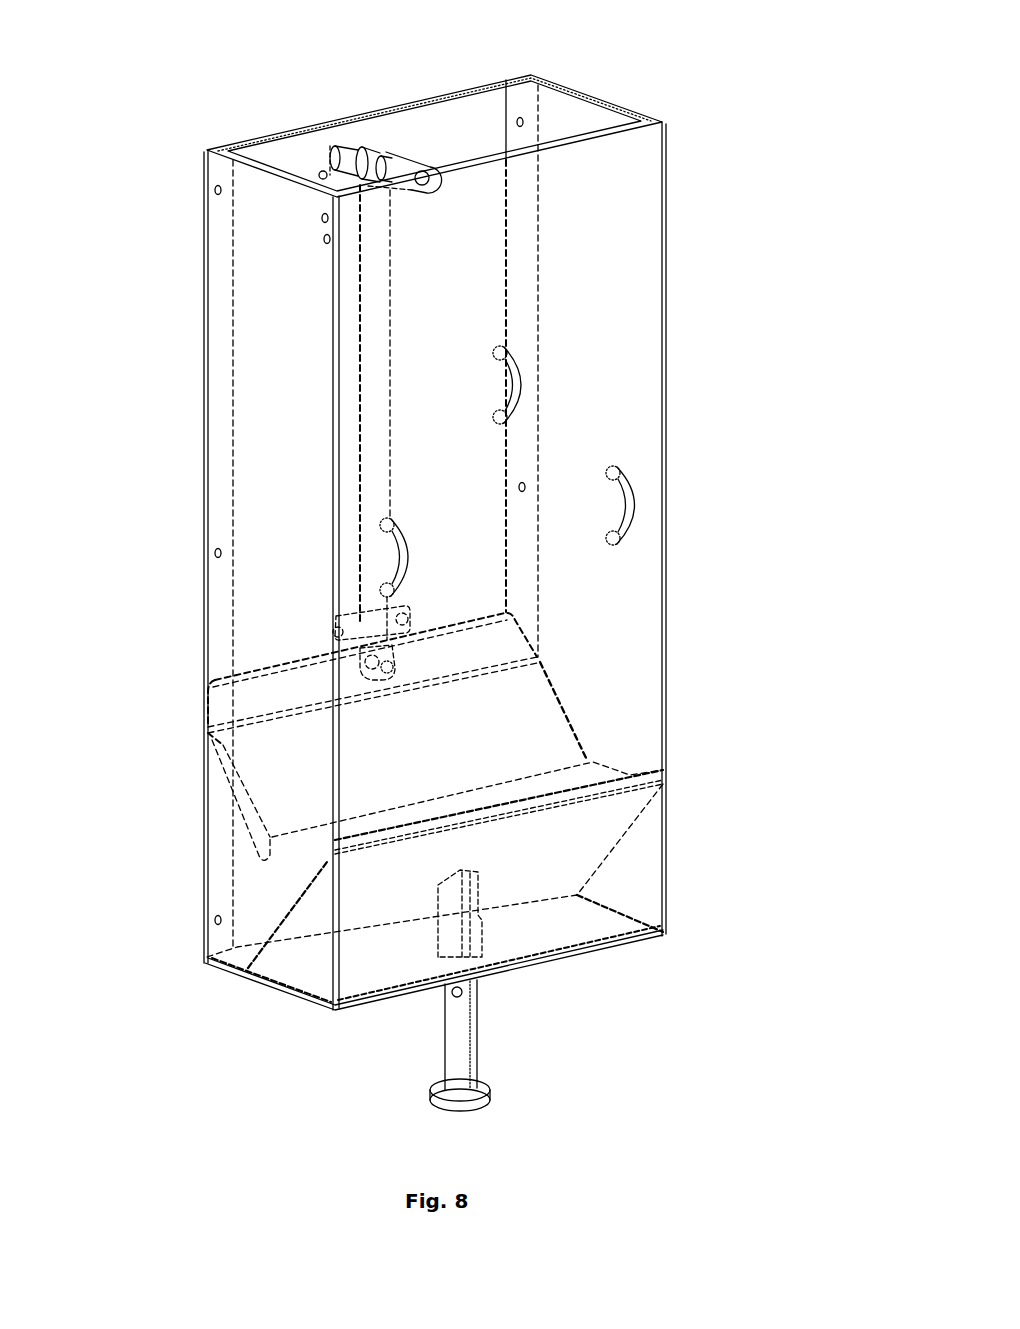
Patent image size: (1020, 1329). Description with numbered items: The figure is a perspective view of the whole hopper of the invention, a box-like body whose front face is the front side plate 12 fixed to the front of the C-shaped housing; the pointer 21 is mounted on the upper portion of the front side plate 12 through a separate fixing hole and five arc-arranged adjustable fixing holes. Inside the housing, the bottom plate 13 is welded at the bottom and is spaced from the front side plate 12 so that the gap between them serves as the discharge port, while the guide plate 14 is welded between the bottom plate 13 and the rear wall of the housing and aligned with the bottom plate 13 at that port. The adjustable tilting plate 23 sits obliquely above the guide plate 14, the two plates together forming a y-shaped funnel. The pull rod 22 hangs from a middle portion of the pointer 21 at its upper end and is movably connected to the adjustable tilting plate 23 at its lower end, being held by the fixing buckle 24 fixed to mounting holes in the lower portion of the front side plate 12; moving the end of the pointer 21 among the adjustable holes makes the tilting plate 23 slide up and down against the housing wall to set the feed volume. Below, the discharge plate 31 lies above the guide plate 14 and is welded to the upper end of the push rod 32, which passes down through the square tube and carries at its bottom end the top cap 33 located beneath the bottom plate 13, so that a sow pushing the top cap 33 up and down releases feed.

The front side plate 12 is at (435, 509).
The pointer 21 is at (372, 113).
The pull rod 22 is at (252, 412).
The fixing buckle 24 is at (257, 553).
The adjustable tilting plate 23 is at (192, 784).
The discharge plate 31 is at (471, 733).
The guide plate 14 is at (671, 844).
The bottom plate 13 is at (461, 957).
The push rod 32 is at (518, 1035).
The top cap 33 is at (510, 1119).